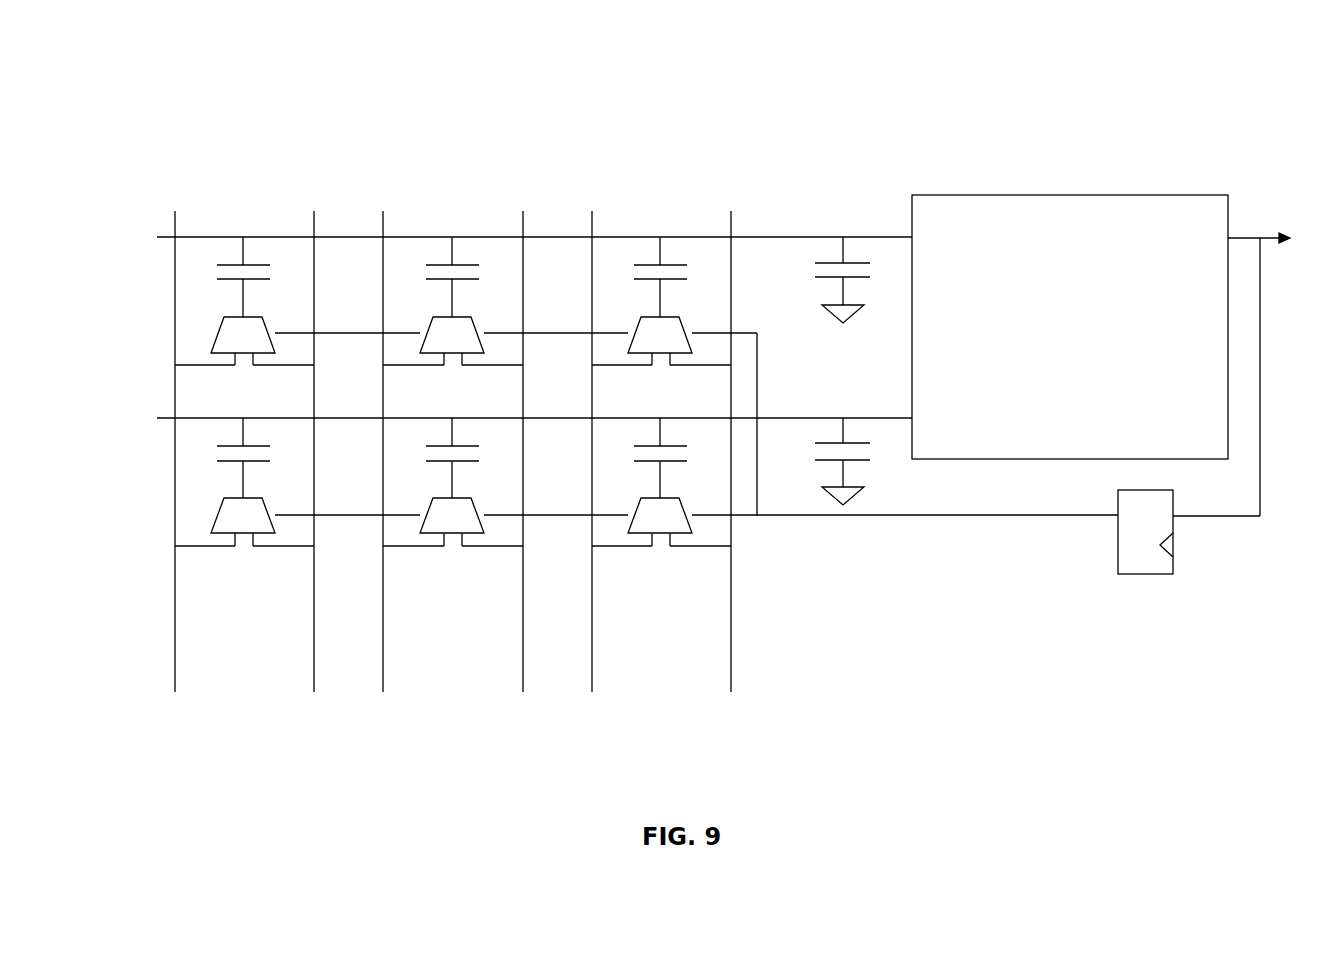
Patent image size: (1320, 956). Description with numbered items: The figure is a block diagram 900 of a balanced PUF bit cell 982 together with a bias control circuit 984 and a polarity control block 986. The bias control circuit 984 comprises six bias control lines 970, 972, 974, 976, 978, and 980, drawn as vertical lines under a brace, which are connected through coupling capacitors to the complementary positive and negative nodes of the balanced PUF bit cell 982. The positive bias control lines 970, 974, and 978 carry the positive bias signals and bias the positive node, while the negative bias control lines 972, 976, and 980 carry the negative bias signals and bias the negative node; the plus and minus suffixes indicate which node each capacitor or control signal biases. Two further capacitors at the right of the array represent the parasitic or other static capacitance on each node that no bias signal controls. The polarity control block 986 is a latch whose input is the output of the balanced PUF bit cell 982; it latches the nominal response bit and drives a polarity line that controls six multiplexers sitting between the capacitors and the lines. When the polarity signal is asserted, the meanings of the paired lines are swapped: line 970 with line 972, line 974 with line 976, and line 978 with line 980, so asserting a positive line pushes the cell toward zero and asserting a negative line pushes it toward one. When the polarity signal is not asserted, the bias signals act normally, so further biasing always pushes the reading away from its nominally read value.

The block diagram 900 is at (211, 70).
The balanced PUF bit cell 982 is at (1085, 195).
The bias control circuit 984 is at (887, 205).
The polarity control block 986 is at (1145, 574).
The bias control line 970 is at (731, 678).
The bias control line 972 is at (592, 678).
The bias control line 974 is at (523, 678).
The bias control line 976 is at (383, 678).
The bias control line 978 is at (314, 678).
The bias control line 980 is at (175, 678).